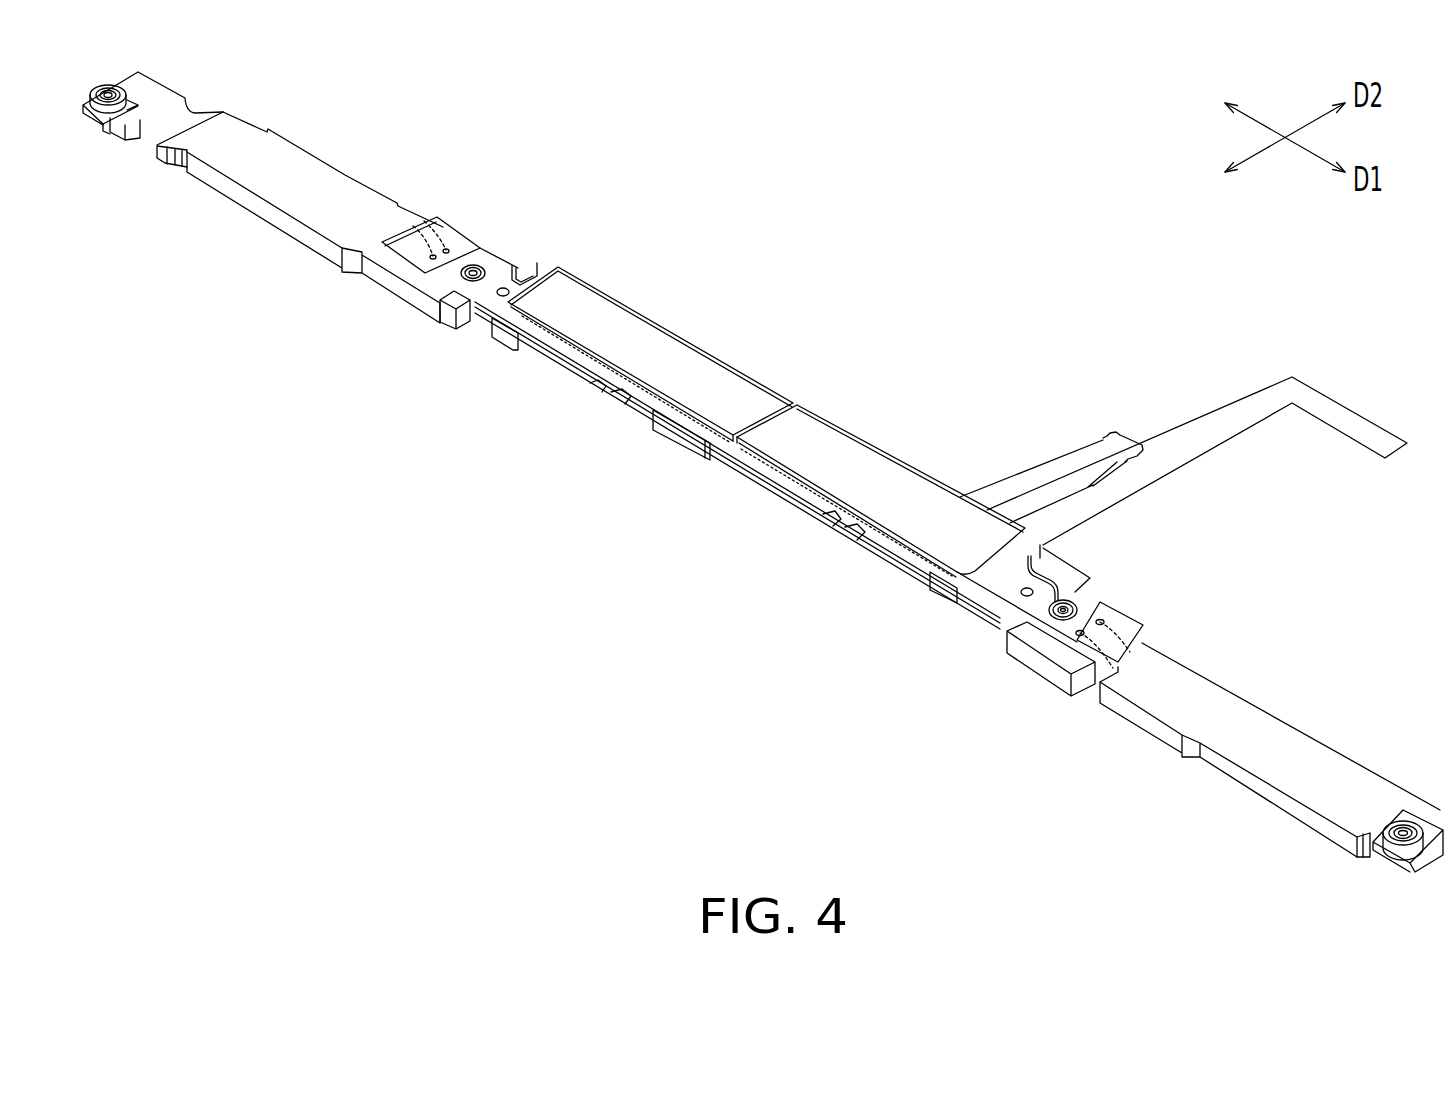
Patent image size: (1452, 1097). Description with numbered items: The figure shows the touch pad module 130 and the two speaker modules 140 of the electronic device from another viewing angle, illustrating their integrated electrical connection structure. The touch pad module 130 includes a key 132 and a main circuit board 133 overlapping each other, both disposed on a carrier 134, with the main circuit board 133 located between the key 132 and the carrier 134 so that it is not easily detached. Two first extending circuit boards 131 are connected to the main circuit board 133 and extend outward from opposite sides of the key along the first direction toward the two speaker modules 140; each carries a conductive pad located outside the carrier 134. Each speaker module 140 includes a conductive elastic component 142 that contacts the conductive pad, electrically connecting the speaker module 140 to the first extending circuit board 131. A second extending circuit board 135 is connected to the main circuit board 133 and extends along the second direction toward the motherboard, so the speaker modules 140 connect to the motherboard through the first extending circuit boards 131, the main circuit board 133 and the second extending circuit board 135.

The touch pad module 130 is at (941, 448).
The first extending circuit board 131 is at (458, 278).
The key 132 is at (808, 433).
The main circuit board 133 is at (843, 493).
The carrier 134 is at (765, 479).
The second extending circuit board 135 is at (1191, 444).
The speaker module 140 is at (302, 183).
The conductive elastic component 142 is at (479, 251).